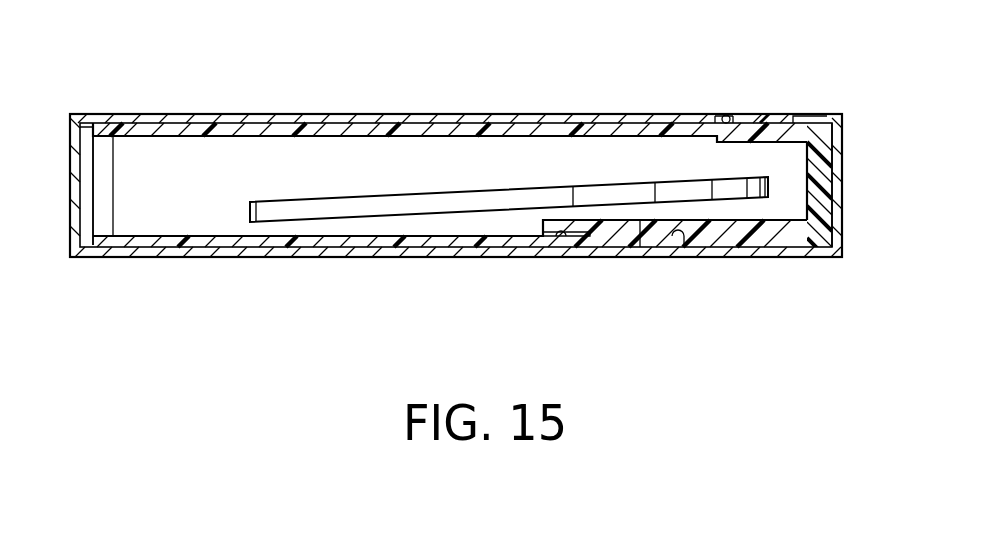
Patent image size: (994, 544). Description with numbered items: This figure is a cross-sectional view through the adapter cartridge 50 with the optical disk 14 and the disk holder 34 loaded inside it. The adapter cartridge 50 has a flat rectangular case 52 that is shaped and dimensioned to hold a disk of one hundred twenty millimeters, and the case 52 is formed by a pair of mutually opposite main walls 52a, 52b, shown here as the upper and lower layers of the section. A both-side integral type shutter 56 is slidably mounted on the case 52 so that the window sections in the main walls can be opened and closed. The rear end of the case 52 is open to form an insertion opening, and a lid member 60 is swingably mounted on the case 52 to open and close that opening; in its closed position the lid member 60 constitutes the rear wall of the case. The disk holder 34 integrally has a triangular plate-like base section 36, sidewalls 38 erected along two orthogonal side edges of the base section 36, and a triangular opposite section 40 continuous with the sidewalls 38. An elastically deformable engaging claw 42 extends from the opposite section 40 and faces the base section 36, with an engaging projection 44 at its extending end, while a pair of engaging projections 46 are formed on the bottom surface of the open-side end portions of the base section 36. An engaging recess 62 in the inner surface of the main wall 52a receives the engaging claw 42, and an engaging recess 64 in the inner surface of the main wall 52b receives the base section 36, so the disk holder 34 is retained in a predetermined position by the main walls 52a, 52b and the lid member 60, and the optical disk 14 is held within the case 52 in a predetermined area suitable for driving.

The optical disk 14 is at (268, 206).
The disk holder 34 is at (768, 250).
The base section 36 is at (652, 233).
The sidewalls 38 is at (820, 204).
The opposite section 40 is at (817, 119).
The engaging claw 42 is at (766, 120).
The engaging projection 44 is at (727, 116).
The engaging projections 46 is at (560, 242).
The adapter cartridge 50 is at (386, 260).
The case 52 is at (551, 117).
The main wall 52a is at (638, 121).
The main wall 52b is at (712, 258).
The shutter 56 is at (178, 124).
The lid member 60 is at (842, 171).
The engaging recess 62 is at (746, 138).
The engaging recess 64 is at (680, 237).